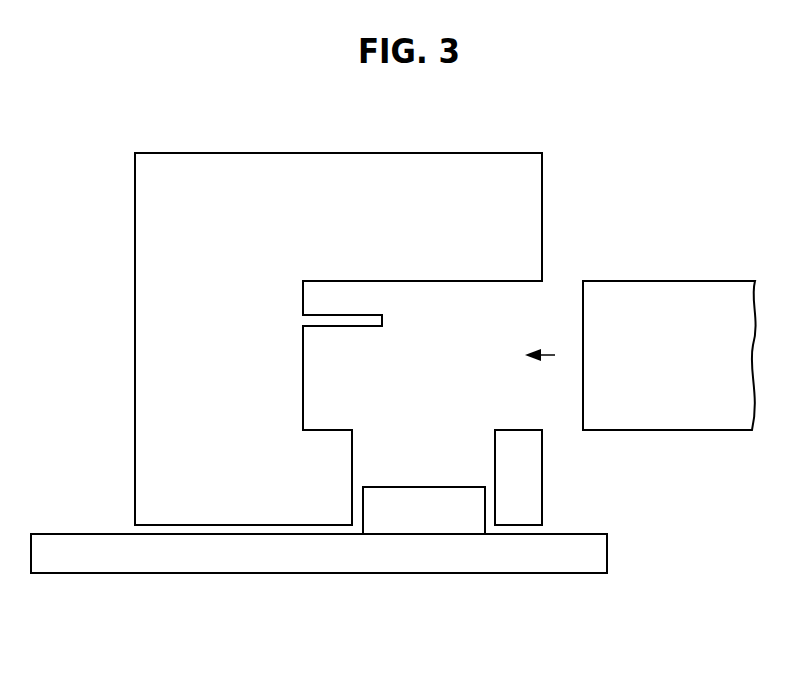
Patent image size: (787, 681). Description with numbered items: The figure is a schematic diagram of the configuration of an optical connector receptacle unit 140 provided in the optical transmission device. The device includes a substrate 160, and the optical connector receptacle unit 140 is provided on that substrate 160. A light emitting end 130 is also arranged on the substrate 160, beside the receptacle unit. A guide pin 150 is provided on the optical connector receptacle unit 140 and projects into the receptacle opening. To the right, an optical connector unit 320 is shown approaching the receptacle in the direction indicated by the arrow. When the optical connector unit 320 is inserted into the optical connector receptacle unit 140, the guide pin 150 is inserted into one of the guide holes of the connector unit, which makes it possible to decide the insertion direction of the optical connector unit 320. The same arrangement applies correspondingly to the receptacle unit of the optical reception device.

The optical connector receptacle unit 140 is at (289, 172).
The guide pin 150 is at (357, 326).
The light emitting end 130 is at (423, 525).
The substrate 160 is at (47, 555).
The optical connector unit 320 is at (667, 281).